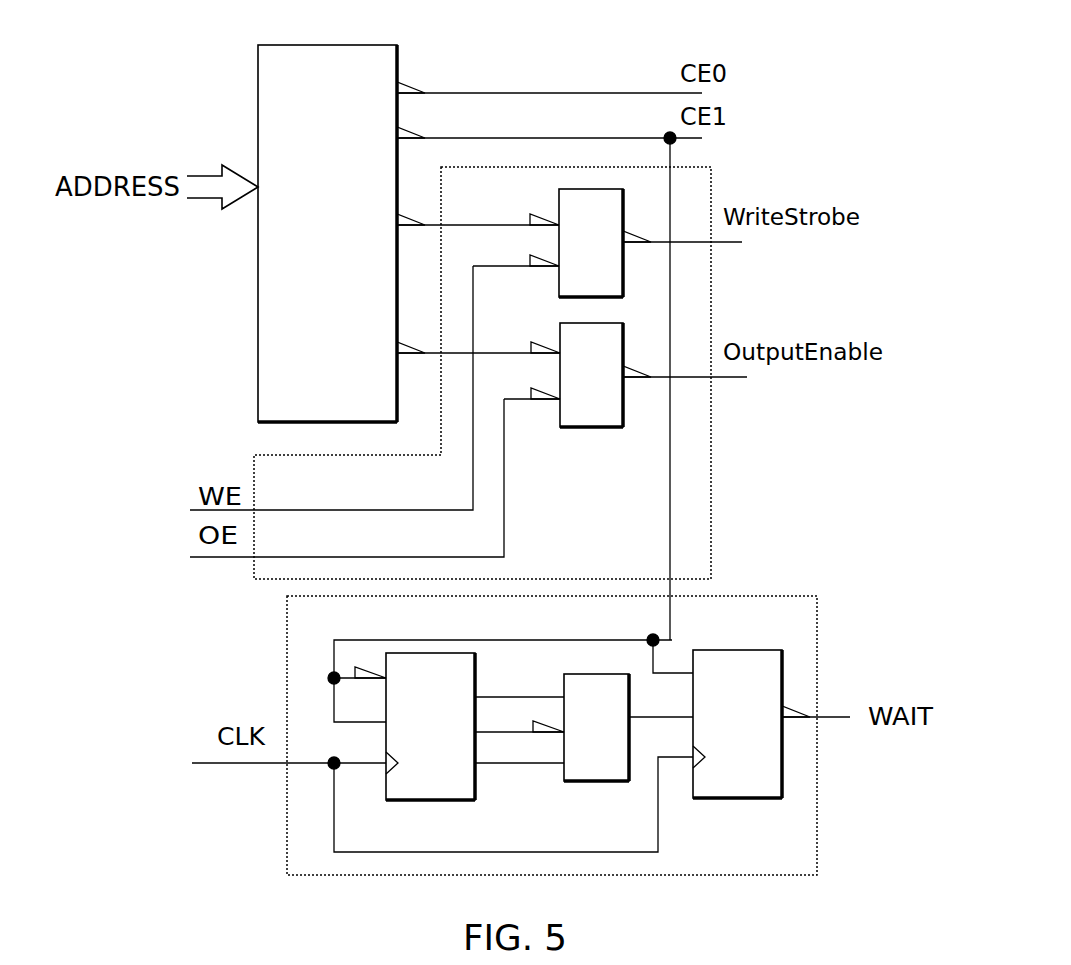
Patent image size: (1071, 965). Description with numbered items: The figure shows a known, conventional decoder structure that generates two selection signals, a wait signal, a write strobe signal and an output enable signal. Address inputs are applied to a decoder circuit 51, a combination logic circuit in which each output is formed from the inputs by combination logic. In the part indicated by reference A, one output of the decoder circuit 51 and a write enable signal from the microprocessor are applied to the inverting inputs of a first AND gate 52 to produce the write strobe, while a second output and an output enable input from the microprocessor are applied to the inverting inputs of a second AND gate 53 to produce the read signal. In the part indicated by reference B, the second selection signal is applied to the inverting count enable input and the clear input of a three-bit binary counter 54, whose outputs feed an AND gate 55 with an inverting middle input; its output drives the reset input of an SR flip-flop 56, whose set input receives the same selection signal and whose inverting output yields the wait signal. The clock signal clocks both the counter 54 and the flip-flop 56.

The decoder circuit 51 is at (321, 53).
The first AND gate 52 is at (608, 203).
The second AND gate 53 is at (612, 338).
The three-bit binary counter 54 is at (462, 677).
The AND gate 55 is at (586, 773).
The SR flip-flop 56 is at (735, 660).
The part generating WriteStrobe and OutputEnable signals A is at (713, 478).
The part generating WAIT signal B is at (757, 595).